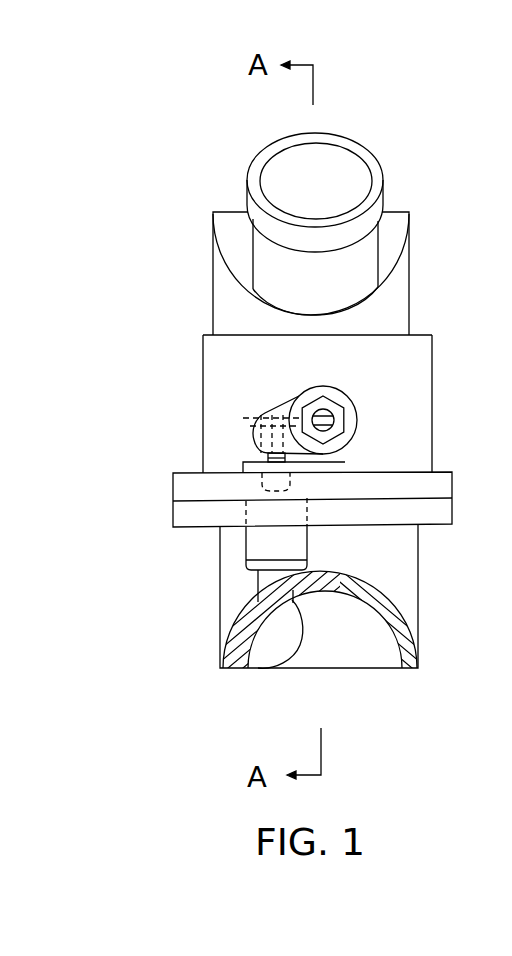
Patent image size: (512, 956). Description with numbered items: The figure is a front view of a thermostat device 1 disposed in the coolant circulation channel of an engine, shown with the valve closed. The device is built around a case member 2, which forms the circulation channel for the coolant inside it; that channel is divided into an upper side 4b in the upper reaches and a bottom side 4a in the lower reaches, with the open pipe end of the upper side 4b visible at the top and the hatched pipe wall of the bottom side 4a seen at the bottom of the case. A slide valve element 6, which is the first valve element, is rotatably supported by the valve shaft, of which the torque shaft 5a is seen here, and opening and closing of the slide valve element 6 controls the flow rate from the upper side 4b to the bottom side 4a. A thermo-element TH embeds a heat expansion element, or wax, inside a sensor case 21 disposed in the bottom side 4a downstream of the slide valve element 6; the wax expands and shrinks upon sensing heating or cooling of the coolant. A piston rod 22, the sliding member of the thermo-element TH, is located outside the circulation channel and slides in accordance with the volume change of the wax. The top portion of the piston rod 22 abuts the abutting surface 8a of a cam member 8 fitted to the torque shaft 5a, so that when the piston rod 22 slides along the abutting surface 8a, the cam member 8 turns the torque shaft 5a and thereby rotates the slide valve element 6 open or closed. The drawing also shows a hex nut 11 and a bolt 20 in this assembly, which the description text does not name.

The thermostat device 1 is at (423, 158).
The case member 2 is at (213, 270).
The bottom side of circulation channel 4a is at (354, 637).
The upper side of circulation channel 4b is at (283, 173).
The torque shaft 5a is at (330, 430).
The slide valve element 6 is at (357, 418).
The cam member 8 is at (358, 437).
The abutting surface 8a is at (262, 401).
The hex nut 11 is at (335, 398).
The fixing bolt 20 is at (267, 544).
The sensor case 21 is at (281, 668).
The piston rod 22 is at (253, 447).
The thermo-element TH is at (247, 582).